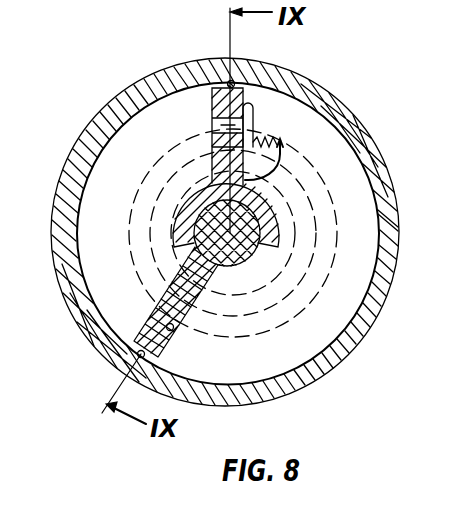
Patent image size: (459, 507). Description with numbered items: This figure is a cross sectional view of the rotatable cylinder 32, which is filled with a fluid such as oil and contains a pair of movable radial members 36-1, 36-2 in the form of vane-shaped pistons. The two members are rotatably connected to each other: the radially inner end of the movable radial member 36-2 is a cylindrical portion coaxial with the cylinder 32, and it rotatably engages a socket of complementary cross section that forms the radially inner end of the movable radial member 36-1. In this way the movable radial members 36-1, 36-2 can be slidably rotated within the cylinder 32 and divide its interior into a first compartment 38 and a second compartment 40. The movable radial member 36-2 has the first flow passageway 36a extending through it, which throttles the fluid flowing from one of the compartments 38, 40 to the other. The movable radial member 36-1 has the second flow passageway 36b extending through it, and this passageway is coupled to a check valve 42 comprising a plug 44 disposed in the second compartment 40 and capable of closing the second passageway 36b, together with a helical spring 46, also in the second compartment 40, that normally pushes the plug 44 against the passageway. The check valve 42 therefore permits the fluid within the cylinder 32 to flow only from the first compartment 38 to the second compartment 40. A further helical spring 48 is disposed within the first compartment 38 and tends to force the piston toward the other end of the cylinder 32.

The cylinder 32 is at (366, 130).
The first flow passageway 36a is at (174, 332).
The second flow passageway 36b is at (212, 121).
The movable radial member 36-1 is at (237, 83).
The movable radial member 36-2 is at (173, 331).
The first compartment 38 is at (111, 326).
The second compartment 40 is at (348, 322).
The check valve 42 is at (250, 120).
The plug 44 is at (255, 137).
The helical spring 46 is at (283, 143).
The helical spring 48 is at (123, 226).